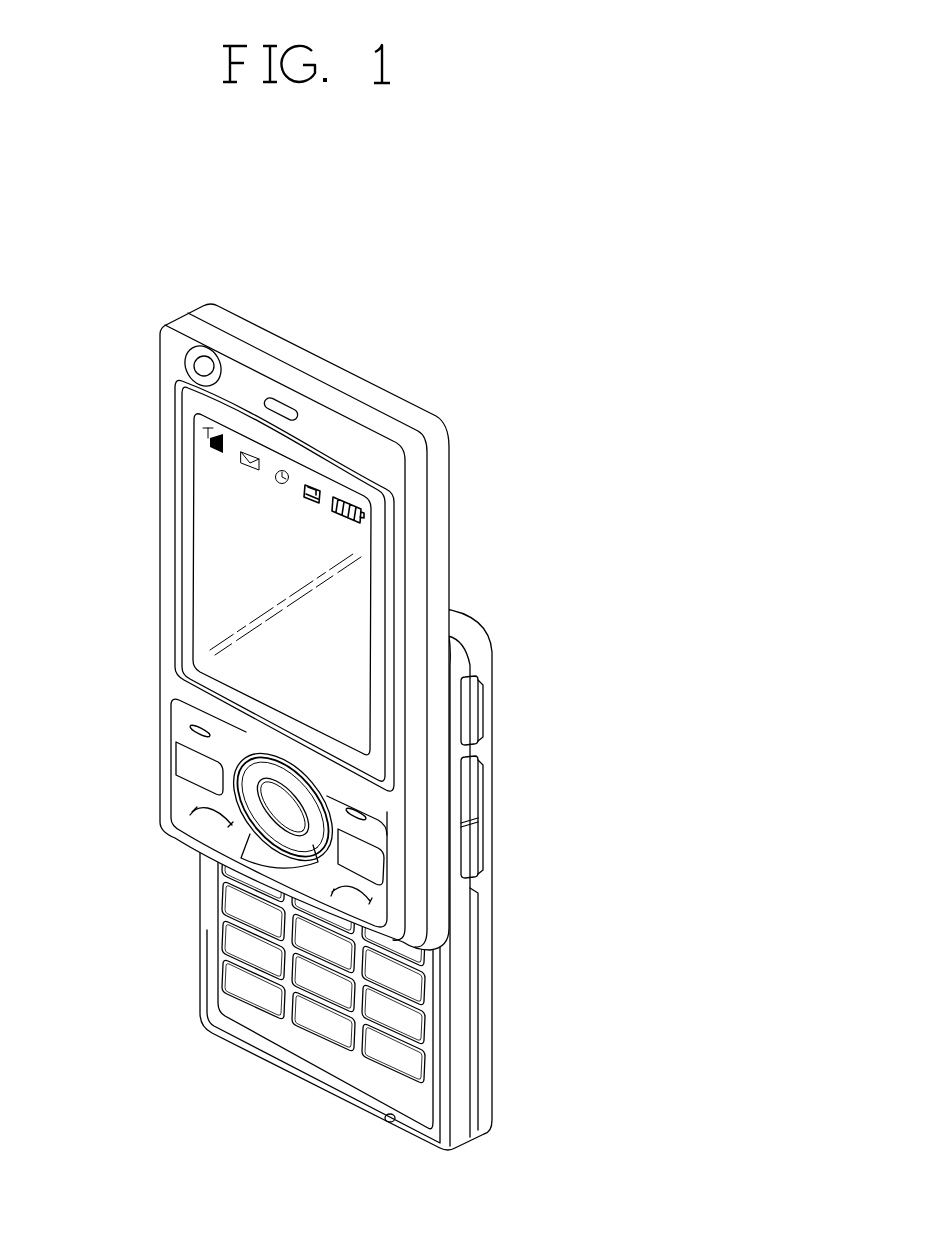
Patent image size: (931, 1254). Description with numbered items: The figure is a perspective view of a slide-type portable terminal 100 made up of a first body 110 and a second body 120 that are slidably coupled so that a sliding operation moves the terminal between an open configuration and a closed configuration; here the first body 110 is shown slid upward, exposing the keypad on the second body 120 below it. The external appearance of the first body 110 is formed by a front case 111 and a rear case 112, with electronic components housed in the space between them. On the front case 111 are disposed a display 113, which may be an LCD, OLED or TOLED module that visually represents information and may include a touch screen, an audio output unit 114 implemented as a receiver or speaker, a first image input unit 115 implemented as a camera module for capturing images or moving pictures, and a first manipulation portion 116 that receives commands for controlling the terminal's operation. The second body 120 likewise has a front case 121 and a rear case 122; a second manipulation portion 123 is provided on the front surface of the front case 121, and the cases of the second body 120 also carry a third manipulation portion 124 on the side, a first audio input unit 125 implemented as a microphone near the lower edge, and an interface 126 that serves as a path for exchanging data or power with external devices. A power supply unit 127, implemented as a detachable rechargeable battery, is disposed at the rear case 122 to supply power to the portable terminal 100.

The portable terminal 100 is at (522, 363).
The first body 110 is at (120, 440).
The front case 111 is at (417, 523).
The rear case 112 is at (438, 487).
The display 113 is at (208, 533).
The audio output unit 114 is at (282, 403).
The first image input unit 115 is at (200, 366).
The first manipulation portion 116 is at (185, 760).
The second body 120 is at (187, 913).
The front case 121 is at (458, 650).
The rear case 122 is at (485, 673).
The second manipulation portion 123 is at (232, 968).
The third manipulation portion 124 is at (478, 843).
The first audio input unit 125 is at (390, 1123).
The interface 126 is at (473, 707).
The power supply unit 127 is at (483, 983).